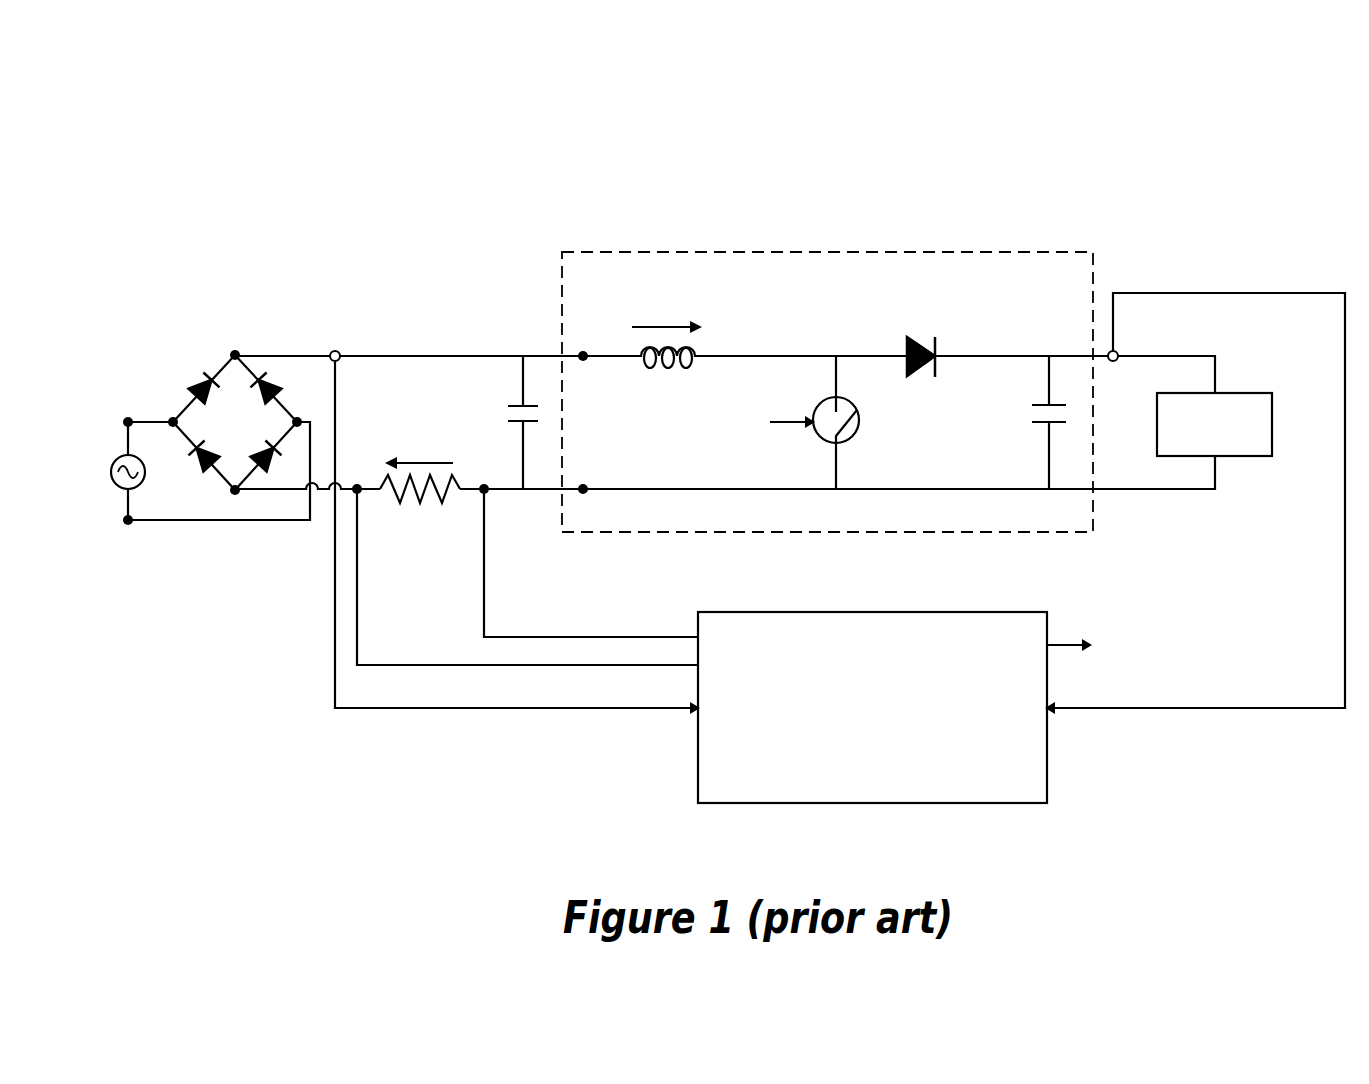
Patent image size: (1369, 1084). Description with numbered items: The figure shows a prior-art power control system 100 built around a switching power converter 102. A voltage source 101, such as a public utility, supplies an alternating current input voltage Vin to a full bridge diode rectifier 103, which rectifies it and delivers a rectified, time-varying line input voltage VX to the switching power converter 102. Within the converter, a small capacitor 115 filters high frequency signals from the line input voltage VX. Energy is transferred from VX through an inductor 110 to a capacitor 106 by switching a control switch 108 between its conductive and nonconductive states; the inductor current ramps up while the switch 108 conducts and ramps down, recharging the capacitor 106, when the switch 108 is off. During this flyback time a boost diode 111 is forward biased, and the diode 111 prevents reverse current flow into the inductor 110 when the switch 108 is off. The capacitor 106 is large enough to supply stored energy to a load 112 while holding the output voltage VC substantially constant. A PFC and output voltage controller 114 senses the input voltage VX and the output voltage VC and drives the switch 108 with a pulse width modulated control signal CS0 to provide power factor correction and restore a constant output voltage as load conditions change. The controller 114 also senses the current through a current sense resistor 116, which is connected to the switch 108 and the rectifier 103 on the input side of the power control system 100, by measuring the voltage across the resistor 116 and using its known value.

The power control system 100 is at (1016, 143).
The voltage source 101 is at (123, 490).
The switching power converter 102 is at (600, 251).
The full bridge diode rectifier 103 is at (235, 422).
The capacitor 106 is at (1043, 425).
The switch 108 is at (822, 440).
The inductor 110 is at (650, 368).
The boost diode 111 is at (915, 343).
The load 112 is at (1229, 392).
The PFC and output voltage controller 114 is at (936, 611).
The capacitor 115 is at (514, 424).
The current sense resistor 116 is at (410, 498).